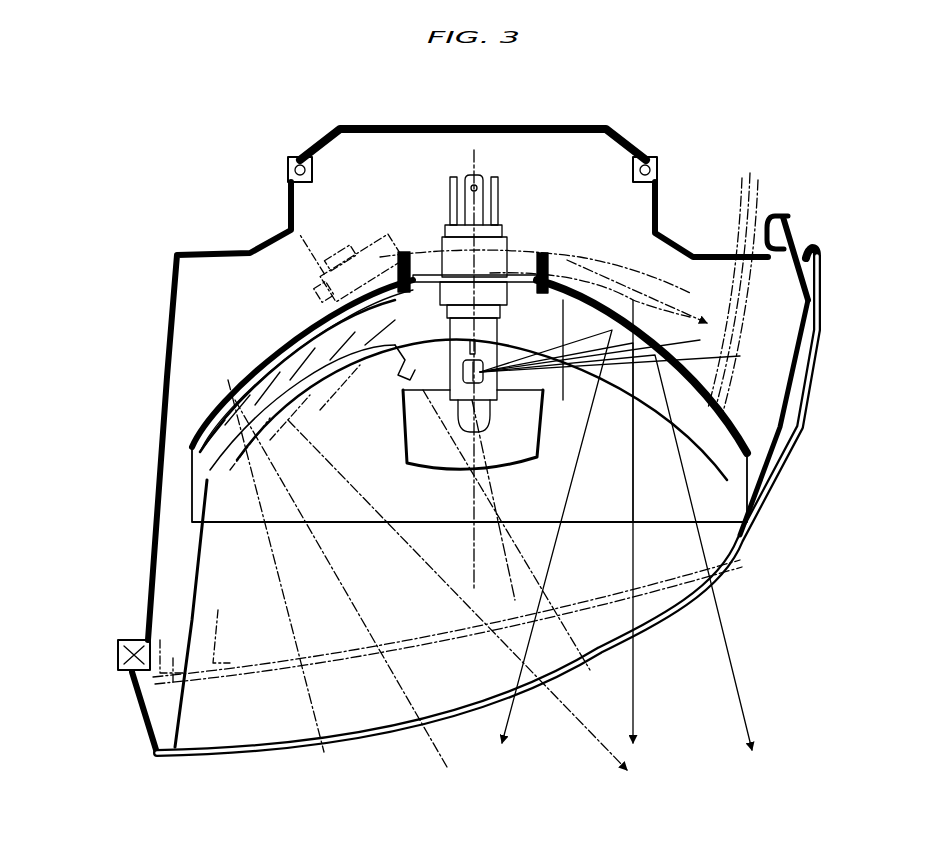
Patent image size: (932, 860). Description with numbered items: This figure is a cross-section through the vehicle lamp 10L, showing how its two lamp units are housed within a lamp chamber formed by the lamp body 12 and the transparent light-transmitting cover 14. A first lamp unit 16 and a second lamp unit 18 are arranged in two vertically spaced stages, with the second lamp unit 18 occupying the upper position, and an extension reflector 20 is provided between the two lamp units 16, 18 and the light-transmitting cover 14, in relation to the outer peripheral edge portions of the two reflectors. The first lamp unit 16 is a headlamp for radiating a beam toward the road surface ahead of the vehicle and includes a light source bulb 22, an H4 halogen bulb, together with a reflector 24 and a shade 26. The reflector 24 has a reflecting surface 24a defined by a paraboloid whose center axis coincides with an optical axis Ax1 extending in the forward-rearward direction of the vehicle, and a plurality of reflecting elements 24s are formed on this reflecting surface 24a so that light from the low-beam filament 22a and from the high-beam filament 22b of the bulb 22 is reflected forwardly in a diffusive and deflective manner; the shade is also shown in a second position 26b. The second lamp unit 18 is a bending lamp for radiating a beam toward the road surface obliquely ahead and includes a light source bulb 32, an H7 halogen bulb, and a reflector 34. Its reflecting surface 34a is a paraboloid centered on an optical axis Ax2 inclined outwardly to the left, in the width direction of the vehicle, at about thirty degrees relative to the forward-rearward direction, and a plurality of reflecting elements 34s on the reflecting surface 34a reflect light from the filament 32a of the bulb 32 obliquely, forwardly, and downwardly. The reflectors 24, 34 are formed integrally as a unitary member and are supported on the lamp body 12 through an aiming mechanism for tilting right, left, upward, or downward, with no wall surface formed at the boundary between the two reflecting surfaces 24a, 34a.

The vehicle lamp 10L is at (842, 200).
The lamp body 12 is at (262, 240).
The light-transmitting cover 14 is at (656, 560).
The first lamp unit 16 is at (764, 433).
The second lamp unit 18 is at (586, 240).
The extension reflector 20 is at (192, 693).
The light source bulb 22 is at (522, 370).
The low-beam filament 22a is at (485, 373).
The high-beam filament 22b is at (478, 346).
The reflector 24 is at (486, 501).
The reflecting surface 24a is at (614, 382).
The reflecting elements 24s is at (660, 420).
The shade 26 is at (471, 477).
The shade phantom position 26b is at (345, 505).
The light source bulb 32 is at (307, 333).
The filament 32a is at (306, 331).
The reflector 34 is at (455, 471).
The reflecting surface 34a is at (662, 292).
The reflecting elements 34s is at (226, 604).
The optical axis Ax1 is at (468, 580).
The optical axis Ax2 is at (495, 503).